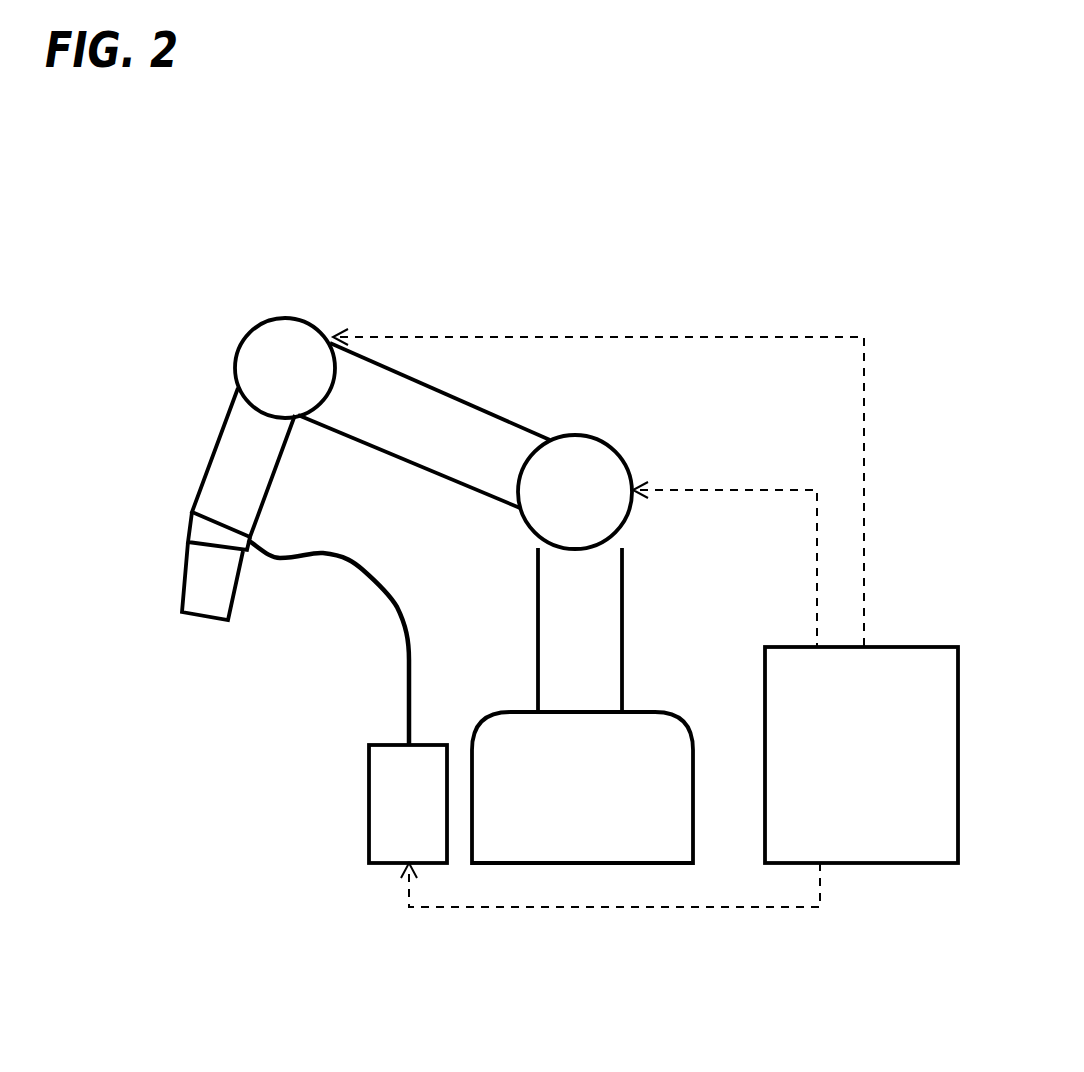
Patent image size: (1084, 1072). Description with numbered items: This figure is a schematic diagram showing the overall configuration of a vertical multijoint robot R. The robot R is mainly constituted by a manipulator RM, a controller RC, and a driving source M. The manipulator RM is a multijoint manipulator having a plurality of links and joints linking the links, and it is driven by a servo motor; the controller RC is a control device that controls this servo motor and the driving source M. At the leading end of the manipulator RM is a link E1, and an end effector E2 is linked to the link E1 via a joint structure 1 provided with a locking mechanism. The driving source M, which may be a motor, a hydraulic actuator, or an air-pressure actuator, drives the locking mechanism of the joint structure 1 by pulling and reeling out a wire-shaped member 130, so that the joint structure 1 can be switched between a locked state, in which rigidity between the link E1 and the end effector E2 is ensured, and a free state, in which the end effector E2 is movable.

The robot R is at (685, 266).
The manipulator RM is at (608, 803).
The controller RC is at (880, 780).
The driving source M is at (421, 822).
The wire-shaped member 130 is at (403, 683).
The joint structure 1 is at (193, 532).
The link E1 is at (223, 455).
The end effector E2 is at (197, 592).